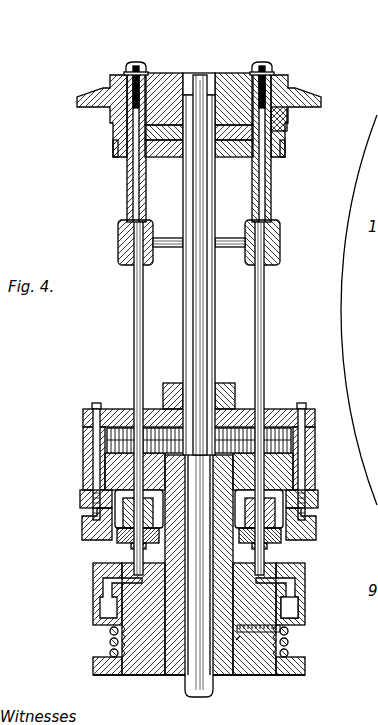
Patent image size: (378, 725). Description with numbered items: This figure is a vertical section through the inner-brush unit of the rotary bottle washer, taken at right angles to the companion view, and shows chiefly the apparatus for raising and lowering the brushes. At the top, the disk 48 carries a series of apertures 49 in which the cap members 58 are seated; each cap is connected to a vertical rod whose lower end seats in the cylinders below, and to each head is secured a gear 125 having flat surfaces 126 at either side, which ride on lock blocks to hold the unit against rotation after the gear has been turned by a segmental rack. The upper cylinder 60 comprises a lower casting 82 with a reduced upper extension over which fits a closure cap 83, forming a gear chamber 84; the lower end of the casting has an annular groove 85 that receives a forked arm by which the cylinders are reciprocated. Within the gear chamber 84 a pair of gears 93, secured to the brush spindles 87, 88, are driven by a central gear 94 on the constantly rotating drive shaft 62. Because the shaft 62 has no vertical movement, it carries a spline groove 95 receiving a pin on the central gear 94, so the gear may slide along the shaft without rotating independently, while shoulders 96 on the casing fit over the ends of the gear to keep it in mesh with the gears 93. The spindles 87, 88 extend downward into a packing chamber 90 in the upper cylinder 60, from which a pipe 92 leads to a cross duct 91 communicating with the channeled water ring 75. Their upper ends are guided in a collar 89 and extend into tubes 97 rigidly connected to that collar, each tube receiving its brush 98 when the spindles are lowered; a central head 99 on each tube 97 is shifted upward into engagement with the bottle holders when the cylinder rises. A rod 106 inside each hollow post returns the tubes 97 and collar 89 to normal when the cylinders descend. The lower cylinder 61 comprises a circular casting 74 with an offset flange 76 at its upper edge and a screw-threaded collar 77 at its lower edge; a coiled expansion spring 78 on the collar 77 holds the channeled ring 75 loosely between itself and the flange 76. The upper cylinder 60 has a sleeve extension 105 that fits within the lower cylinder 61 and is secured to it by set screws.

The disk 48 is at (319, 101).
The apertures 49 is at (288, 122).
The cap members 58 is at (170, 76).
The upper cylinder 60 is at (82, 456).
The lower cylinder 61 is at (306, 580).
The drive shaft 62 is at (206, 372).
The circular casting 74 is at (262, 632).
The channeled ring 75 is at (306, 612).
The offset flange 76 is at (306, 566).
The collar 77 is at (93, 668).
The coiled expansion spring 78 is at (292, 640).
The lower casting 82 is at (86, 484).
The closure cap 83 is at (85, 465).
The gear chamber 84 is at (105, 424).
The annular groove 85 is at (82, 525).
The brush spindle 87 is at (134, 308).
The brush spindle 88 is at (264, 321).
The collar 89 is at (118, 239).
The packing chamber 90 is at (112, 506).
The cross duct 91 is at (103, 580).
The pipe 92 is at (132, 548).
The gears 93 is at (110, 440).
The central gear 94 is at (190, 440).
The spline groove 95 is at (195, 336).
The shoulders 96 is at (240, 425).
The tube 97 is at (126, 190).
The brushes 98 is at (126, 68).
The central head 99 is at (140, 63).
The sleeve extension 105 is at (165, 655).
The rod 106 is at (238, 640).
The gear 125 is at (112, 149).
The flat surfaces 126 is at (112, 130).